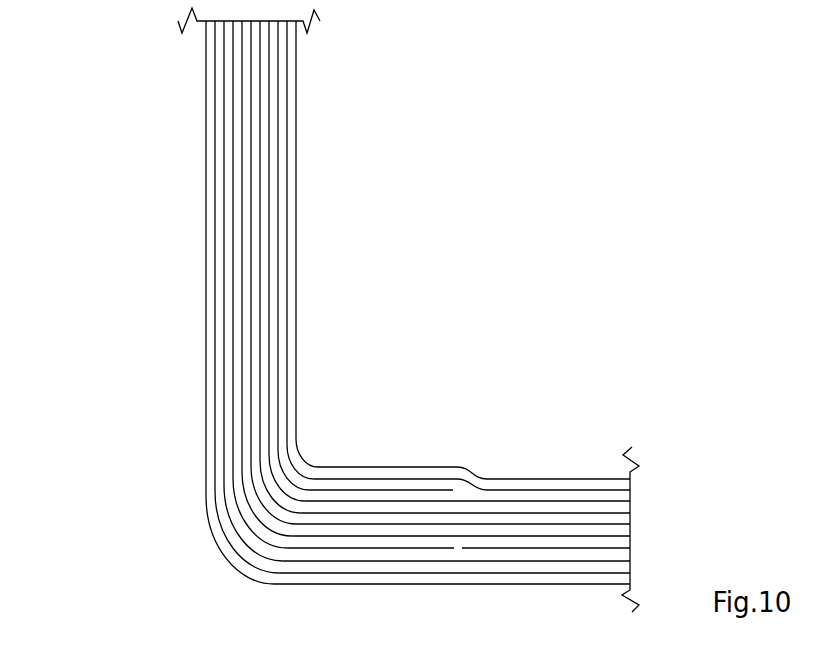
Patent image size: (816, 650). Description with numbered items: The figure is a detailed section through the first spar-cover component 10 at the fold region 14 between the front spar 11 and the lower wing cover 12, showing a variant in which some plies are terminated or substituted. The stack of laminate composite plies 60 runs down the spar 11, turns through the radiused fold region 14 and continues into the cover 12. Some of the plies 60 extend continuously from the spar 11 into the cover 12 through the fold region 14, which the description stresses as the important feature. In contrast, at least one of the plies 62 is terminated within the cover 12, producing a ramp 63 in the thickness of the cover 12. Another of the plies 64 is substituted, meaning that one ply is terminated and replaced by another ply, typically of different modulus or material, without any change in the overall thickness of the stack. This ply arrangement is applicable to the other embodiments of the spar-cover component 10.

The first spar-cover component 10 is at (120, 330).
The front spar 11 is at (310, 146).
The lower wing cover 12 is at (569, 445).
The fold region 14 is at (205, 561).
The laminate composite plies 60 is at (378, 467).
The terminated ply 62 is at (352, 490).
The ramp 63 is at (491, 464).
The substituted ply 64 is at (347, 550).